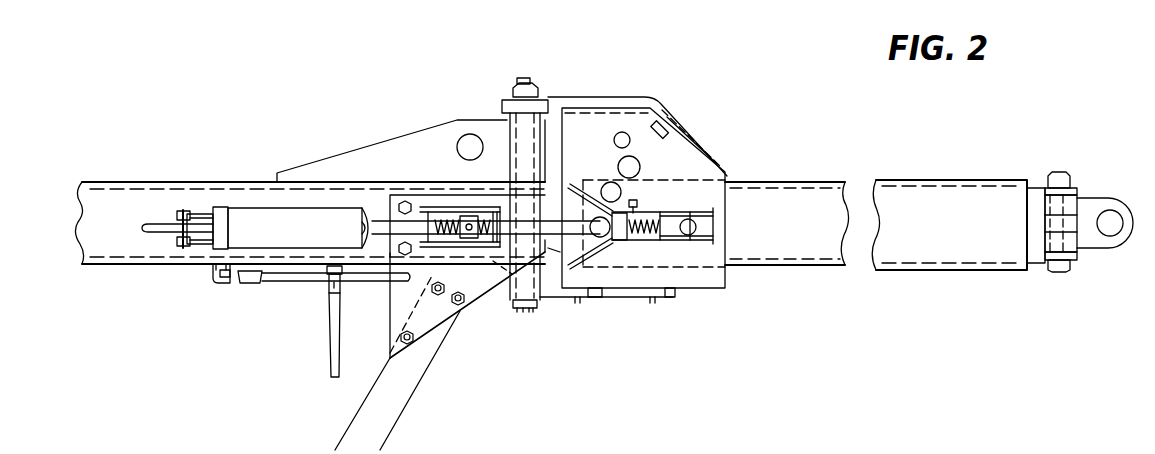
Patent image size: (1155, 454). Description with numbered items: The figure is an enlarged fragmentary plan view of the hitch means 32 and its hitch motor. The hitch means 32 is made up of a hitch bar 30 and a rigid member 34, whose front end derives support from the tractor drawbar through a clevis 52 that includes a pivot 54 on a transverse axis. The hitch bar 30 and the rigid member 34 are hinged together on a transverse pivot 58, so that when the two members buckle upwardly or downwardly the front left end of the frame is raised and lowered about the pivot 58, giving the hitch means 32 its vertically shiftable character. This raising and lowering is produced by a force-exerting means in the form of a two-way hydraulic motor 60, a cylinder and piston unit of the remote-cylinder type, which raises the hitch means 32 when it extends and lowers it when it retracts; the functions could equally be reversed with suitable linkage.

The hitch bar 30 is at (127, 209).
The hitch means 32 is at (703, 122).
The rigid member 34 is at (908, 204).
The clevis 52 is at (1088, 205).
The pivot 54 is at (1062, 151).
The pivot 58 is at (523, 79).
The hydraulic motor 60 is at (262, 218).